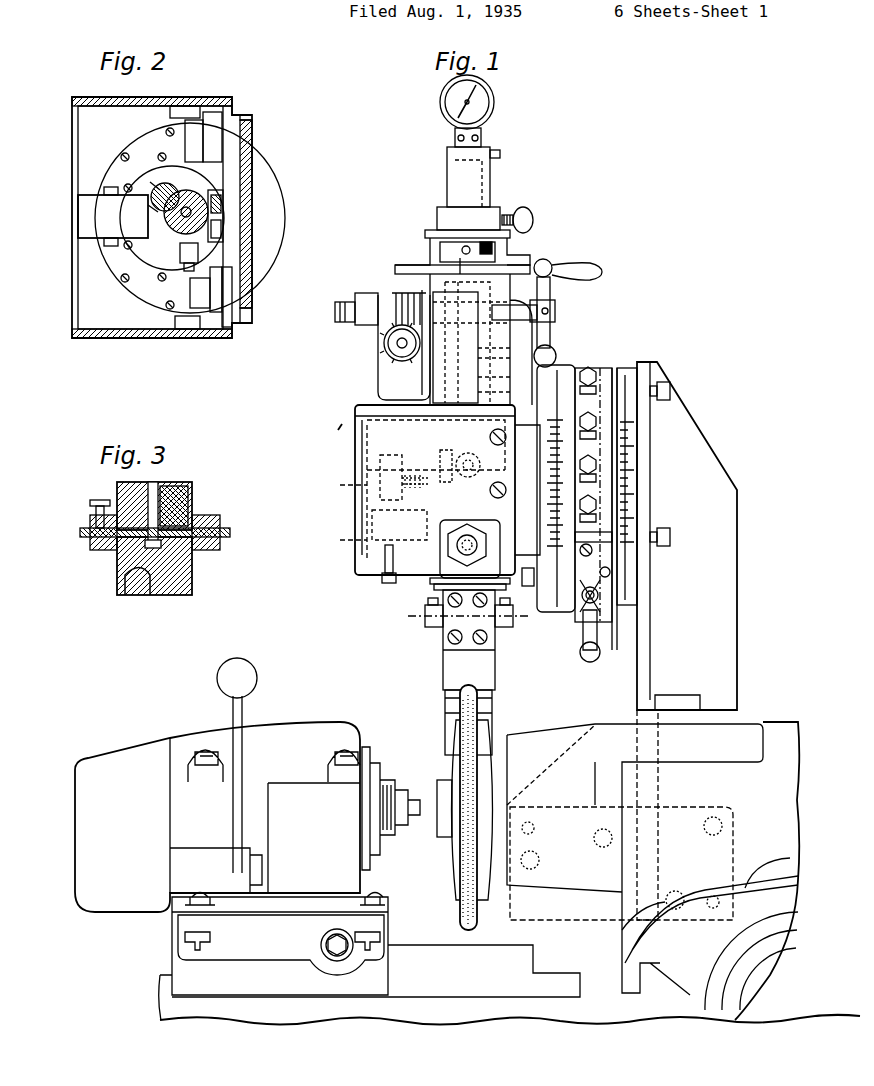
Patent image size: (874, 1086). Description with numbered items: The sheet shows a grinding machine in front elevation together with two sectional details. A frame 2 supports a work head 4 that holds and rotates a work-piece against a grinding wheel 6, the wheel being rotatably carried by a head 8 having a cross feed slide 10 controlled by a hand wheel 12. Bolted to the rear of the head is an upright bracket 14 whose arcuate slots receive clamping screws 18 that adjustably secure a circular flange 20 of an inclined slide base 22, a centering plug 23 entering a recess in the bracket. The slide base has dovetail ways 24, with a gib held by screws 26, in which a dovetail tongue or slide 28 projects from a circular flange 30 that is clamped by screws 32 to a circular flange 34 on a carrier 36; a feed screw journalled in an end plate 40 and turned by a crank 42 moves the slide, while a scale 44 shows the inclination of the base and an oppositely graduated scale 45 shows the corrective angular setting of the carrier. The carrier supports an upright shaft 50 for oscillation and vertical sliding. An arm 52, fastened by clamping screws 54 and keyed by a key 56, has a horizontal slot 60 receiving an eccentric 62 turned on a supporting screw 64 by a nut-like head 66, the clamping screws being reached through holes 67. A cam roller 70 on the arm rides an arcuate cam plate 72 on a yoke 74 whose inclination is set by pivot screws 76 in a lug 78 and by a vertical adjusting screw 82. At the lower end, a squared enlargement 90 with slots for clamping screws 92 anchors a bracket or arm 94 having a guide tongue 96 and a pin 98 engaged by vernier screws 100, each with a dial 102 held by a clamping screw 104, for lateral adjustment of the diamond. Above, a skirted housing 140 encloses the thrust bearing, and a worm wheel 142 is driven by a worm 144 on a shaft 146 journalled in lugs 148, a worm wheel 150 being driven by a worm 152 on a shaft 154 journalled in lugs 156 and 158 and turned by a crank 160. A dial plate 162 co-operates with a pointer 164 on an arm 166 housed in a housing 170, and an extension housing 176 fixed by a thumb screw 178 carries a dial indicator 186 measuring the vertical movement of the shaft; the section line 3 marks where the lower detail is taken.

In FIG. 1, the frame 2 is at (373, 1040).
In FIG. 1, the section line 3— 3 is at (525, 614).
In FIG. 1, the work head 4 is at (303, 757).
In FIG. 1, the grinding wheel 6 is at (480, 918).
In FIG. 1, the head 8 is at (580, 786).
In FIG. 1, the cross feed slide 10 is at (688, 960).
In FIG. 1, the hand wheel 12 is at (709, 1015).
In FIG. 1, the upright bracket 14 is at (700, 674).
In FIG. 1, the clamping screws 18 is at (670, 392).
In FIG. 1, the circular flange 20 is at (628, 360).
In FIG. 1, the inclined slide base 22 is at (603, 360).
In FIG. 1, the centering plug 23 is at (630, 420).
In FIG. 1, the dovetail ways 24 is at (600, 633).
In FIG. 1, the screws 26 is at (588, 368).
In FIG. 1, the dovetail tongue or slide 28 is at (608, 572).
In FIG. 1, the circular flange 30 is at (566, 613).
In FIG. 1, the clamping screws 32 is at (500, 582).
In FIG. 1, the circular flange 34 is at (546, 613).
In FIG. 2, the carrier 36 is at (248, 162).
In FIG. 1, the carrier 36 is at (356, 566).
In FIG. 1, the end plate 40 is at (612, 540).
In FIG. 1, the crank 42 is at (587, 662).
In FIG. 1, the scale 44 is at (628, 500).
In FIG. 1, the scale 45 is at (552, 500).
In FIG. 2, the upright shaft 50 is at (208, 196).
In FIG. 1, the upright shaft 50 is at (440, 432).
In FIG. 2, the arm 52 is at (125, 225).
In FIG. 1, the arm 52 is at (356, 460).
In FIG. 2, the clamping screws 54 is at (232, 200).
In FIG. 1, the clamping screws 54 is at (490, 436).
In FIG. 2, the key 56 is at (175, 184).
In FIG. 2, the horizontal slot 60 is at (150, 288).
In FIG. 2, the eccentric 62 is at (204, 250).
In FIG. 1, the eccentric 62 is at (479, 491).
In FIG. 2, the supporting screw 64 is at (185, 308).
In FIG. 2, the nut-like head 66 is at (244, 262).
In FIG. 2, the holes 67 is at (224, 330).
In FIG. 1, the holes 67 is at (475, 466).
In FIG. 2, the cam follower or roller 70 is at (100, 190).
In FIG. 1, the cam follower or roller 70 is at (357, 505).
In FIG. 2, the arcuate cam plate 72 is at (105, 262).
In FIG. 1, the arcuate cam plate 72 is at (357, 520).
In FIG. 2, the cam supporting yoke 74 is at (200, 295).
In FIG. 1, the cam supporting yoke 74 is at (372, 536).
In FIG. 2, the pivot screws 76 is at (190, 112).
In FIG. 1, the pivot screws 76 is at (440, 560).
In FIG. 2, the lug 78 is at (150, 262).
In FIG. 1, the vertical adjusting screw 82 is at (385, 580).
In FIG. 3, the squared enlargement 90 is at (195, 575).
In FIG. 1, the squared enlargement 90 is at (469, 640).
In FIG. 3, the clamping screws 92 is at (170, 595).
In FIG. 1, the clamping screws 92 is at (452, 645).
In FIG. 3, the bracket or arm 94 is at (190, 492).
In FIG. 1, the bracket or arm 94 is at (445, 685).
In FIG. 3, the guide tongue 96 is at (192, 512).
In FIG. 3, the pin 98 is at (155, 484).
In FIG. 3, the vernier screws 100 is at (85, 535).
In FIG. 1, the vernier screws 100 is at (430, 618).
In FIG. 3, the dial 102 is at (100, 548).
In FIG. 1, the dial 102 is at (432, 628).
In FIG. 3, the clamping screw 104 is at (95, 510).
In FIG. 1, the skirted housing 140 is at (551, 284).
In FIG. 1, the worm wheel 142 is at (552, 327).
In FIG. 1, the worm 144 is at (380, 358).
In FIG. 1, the shaft 146 is at (384, 343).
In FIG. 1, the lugs 148 is at (380, 376).
In FIG. 1, the worm wheel 150 is at (370, 335).
In FIG. 1, the worm 152 is at (415, 305).
In FIG. 1, the shaft 154 is at (523, 311).
In FIG. 1, the lug 156 is at (370, 300).
In FIG. 1, the lug 158 is at (410, 298).
In FIG. 1, the crank 160 is at (590, 265).
In FIG. 1, the dial plate 162 is at (425, 240).
In FIG. 1, the pointer 164 is at (472, 267).
In FIG. 1, the arm 166 is at (505, 248).
In FIG. 1, the housing 170 is at (437, 220).
In FIG. 1, the extension housing 176 is at (492, 190).
In FIG. 1, the thumb screw 178 is at (532, 214).
In FIG. 1, the dial indicator 186 is at (494, 105).